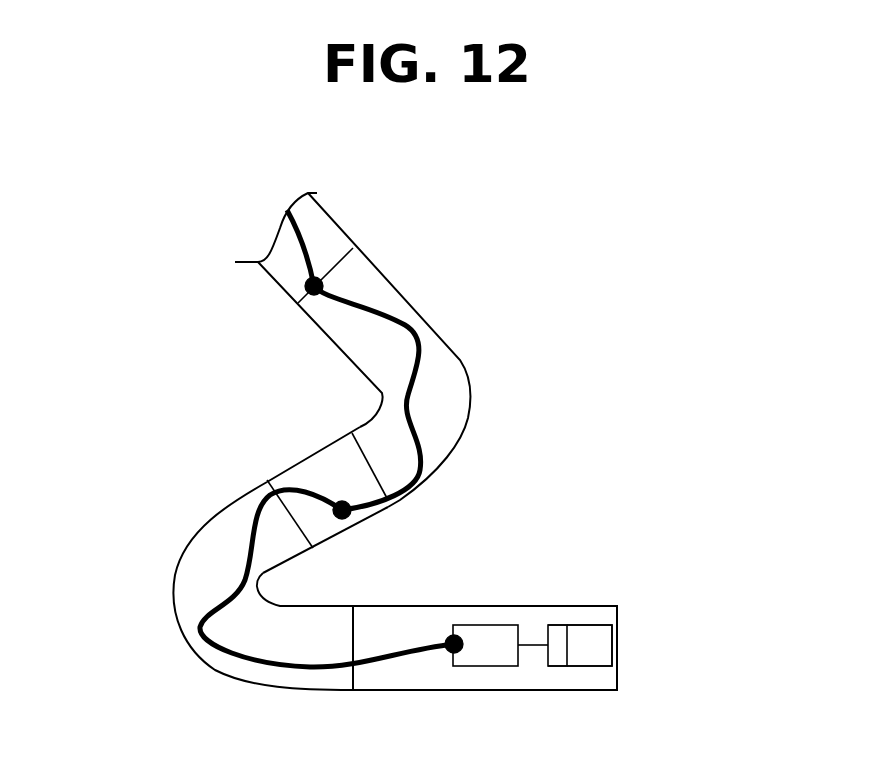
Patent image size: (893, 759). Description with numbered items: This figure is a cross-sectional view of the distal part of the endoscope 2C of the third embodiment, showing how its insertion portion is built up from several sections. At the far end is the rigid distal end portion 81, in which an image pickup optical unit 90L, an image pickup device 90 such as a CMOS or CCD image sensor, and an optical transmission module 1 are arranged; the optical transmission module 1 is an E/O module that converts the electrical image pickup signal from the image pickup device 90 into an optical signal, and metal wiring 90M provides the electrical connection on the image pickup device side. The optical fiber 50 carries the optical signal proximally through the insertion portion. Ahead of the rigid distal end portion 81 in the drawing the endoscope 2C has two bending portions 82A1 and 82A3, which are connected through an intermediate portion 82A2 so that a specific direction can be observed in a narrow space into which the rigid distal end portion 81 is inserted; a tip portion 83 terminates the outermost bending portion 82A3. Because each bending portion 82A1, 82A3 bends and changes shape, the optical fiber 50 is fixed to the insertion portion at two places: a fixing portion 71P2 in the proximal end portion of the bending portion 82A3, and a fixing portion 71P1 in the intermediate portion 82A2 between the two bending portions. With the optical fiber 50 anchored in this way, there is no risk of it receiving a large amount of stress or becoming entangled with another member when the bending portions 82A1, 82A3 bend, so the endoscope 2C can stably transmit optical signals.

The endoscope 2C is at (693, 237).
The tip portion 83 is at (337, 222).
The bending portion 82A3 is at (447, 340).
The intermediate portion 82A2 is at (312, 450).
The bending portion 82A1 is at (170, 568).
The rigid distal end portion 81 is at (578, 606).
The optical transmission module 1 is at (485, 623).
The image pickup device 90 is at (557, 666).
The metal wiring 90M is at (532, 645).
The image pickup optical unit 90L is at (595, 666).
The optical fiber 50 is at (407, 407).
The fixing portion 71P2 is at (293, 282).
The fixing portion 71P1 is at (352, 522).